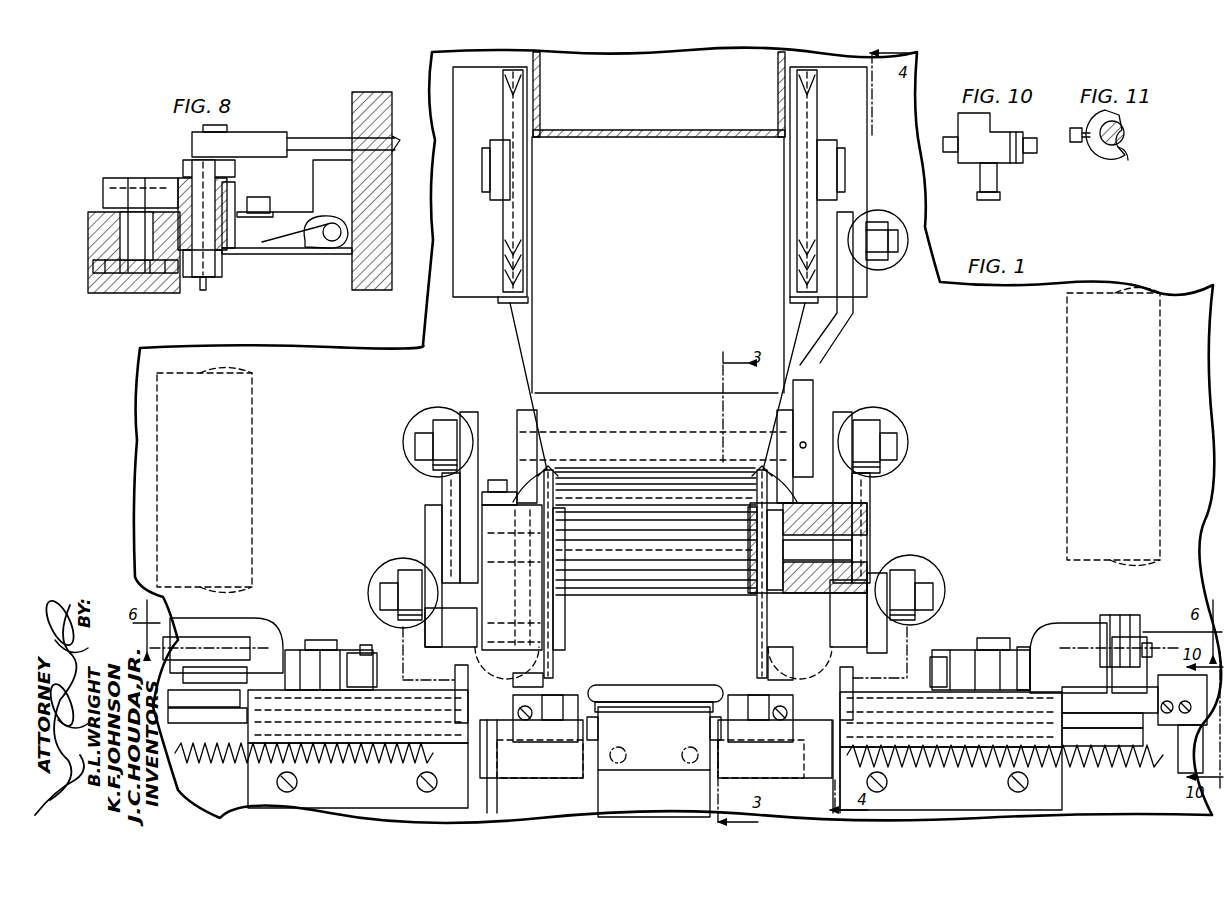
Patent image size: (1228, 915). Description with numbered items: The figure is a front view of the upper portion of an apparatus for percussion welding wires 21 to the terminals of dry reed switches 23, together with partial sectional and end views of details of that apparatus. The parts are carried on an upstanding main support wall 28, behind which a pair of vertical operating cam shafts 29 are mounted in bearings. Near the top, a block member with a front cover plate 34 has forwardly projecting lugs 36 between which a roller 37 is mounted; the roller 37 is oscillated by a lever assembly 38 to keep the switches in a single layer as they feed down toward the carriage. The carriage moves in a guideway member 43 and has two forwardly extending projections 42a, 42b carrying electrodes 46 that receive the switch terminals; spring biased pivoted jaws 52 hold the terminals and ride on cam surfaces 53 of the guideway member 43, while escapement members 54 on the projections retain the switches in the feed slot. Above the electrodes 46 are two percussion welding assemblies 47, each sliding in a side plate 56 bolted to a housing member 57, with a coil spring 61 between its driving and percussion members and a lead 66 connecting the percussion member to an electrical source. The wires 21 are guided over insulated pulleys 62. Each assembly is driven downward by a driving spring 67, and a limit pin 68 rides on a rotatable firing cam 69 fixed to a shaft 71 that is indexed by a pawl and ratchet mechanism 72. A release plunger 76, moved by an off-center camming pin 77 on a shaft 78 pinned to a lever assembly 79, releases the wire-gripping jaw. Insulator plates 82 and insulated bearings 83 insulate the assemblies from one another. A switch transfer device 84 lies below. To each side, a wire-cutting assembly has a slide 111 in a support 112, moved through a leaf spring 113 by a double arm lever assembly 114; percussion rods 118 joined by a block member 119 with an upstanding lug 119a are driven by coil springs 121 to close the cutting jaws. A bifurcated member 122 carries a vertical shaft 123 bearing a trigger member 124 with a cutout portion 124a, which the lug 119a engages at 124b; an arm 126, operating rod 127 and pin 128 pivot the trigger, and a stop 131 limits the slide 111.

In FIG. 1, the wires 21 is at (822, 340).
In FIG. 1, the dry reed switches 23 is at (654, 762).
In FIG. 1, the main support wall 28 is at (948, 351).
In FIG. 8, the main support wall 28 is at (352, 97).
In FIG. 1, the operating cam shafts 29 is at (245, 414).
In FIG. 1, the front cover plate 34 is at (660, 505).
In FIG. 1, the lugs 36 is at (523, 413).
In FIG. 1, the roller 37 is at (627, 403).
In FIG. 1, the lever assembly 38 is at (878, 270).
In FIG. 1, the projection of the carriage 42a is at (628, 688).
In FIG. 1, the projection of the carriage 42b is at (685, 690).
In FIG. 1, the guideway member 43 is at (553, 775).
In FIG. 1, the electrodes 46 is at (580, 700).
In FIG. 1, the percussion welding assemblies 47 is at (562, 502).
In FIG. 8, the percussion welding assemblies 47 is at (130, 290).
In FIG. 1, the pivoted jaws 52 is at (520, 675).
In FIG. 1, the cam surfaces 53 is at (530, 745).
In FIG. 1, the escapement members 54 is at (615, 712).
In FIG. 1, the side plate 56 is at (745, 576).
In FIG. 8, the side plate 56 is at (90, 285).
In FIG. 1, the housing member 57 is at (530, 605).
In FIG. 8, the housing member 57 is at (265, 225).
In FIG. 8, the coil spring 61 is at (160, 293).
In FIG. 1, the insulated pulleys 62 is at (522, 213).
In FIG. 1, the lead 66 is at (493, 643).
In FIG. 8, the lead 66 is at (243, 212).
In FIG. 1, the driving spring 67 is at (510, 500).
In FIG. 8, the driving spring 67 is at (300, 247).
In FIG. 1, the limit pin 68 is at (739, 527).
In FIG. 8, the limit pin 68 is at (88, 248).
In FIG. 1, the rotatable firing cam 69 is at (760, 546).
In FIG. 8, the rotatable firing cam 69 is at (120, 290).
In FIG. 1, the shaft 71 is at (855, 543).
In FIG. 8, the shaft 71 is at (120, 238).
In FIG. 1, the pawl and ratchet mechanism 72 is at (447, 497).
In FIG. 8, the pawl and ratchet mechanism 72 is at (128, 178).
In FIG. 1, the release plunger 76 is at (563, 634).
In FIG. 8, the release plunger 76 is at (203, 290).
In FIG. 8, the camming pin 77 is at (208, 292).
In FIG. 1, the shaft 78 is at (503, 623).
In FIG. 8, the shaft 78 is at (222, 270).
In FIG. 1, the lever assembly 79 is at (447, 420).
In FIG. 8, the lever assembly 79 is at (265, 140).
In FIG. 1, the insulator plates 82 is at (752, 590).
In FIG. 8, the insulator plates 82 is at (183, 165).
In FIG. 1, the insulated bearings 83 is at (812, 595).
In FIG. 8, the insulated bearings 83 is at (100, 222).
In FIG. 1, the dry reed switch transfer device 84 is at (595, 795).
In FIG. 1, the slide 111 is at (255, 695).
In FIG. 1, the support 112 is at (255, 782).
In FIG. 1, the leaf spring 113 is at (1027, 647).
In FIG. 1, the double arm lever assembly 114 is at (656, 659).
In FIG. 1, the percussion rods 118 is at (248, 728).
In FIG. 1, the block member 119 is at (1180, 765).
In FIG. 10, the block member 119 is at (997, 153).
In FIG. 10, the upstanding lug 119a is at (973, 122).
In FIG. 1, the coil springs 121 is at (360, 765).
In FIG. 10, the coil springs 121 is at (1000, 193).
In FIG. 1, the bifurcated member 122 is at (255, 620).
In FIG. 1, the vertical shaft 123 is at (1120, 613).
In FIG. 11, the vertical shaft 123 is at (1105, 150).
In FIG. 1, the trigger member 124 is at (175, 640).
In FIG. 11, the trigger member 124 is at (1137, 128).
In FIG. 11, the cutout portion 124a is at (1125, 150).
In FIG. 11, the engagement point of the trigger member 124b is at (1137, 138).
In FIG. 1, the arm 126 is at (1150, 640).
In FIG. 1, the operating rod 127 is at (292, 650).
In FIG. 1, the pin 128 is at (333, 640).
In FIG. 1, the stop 131 is at (455, 675).